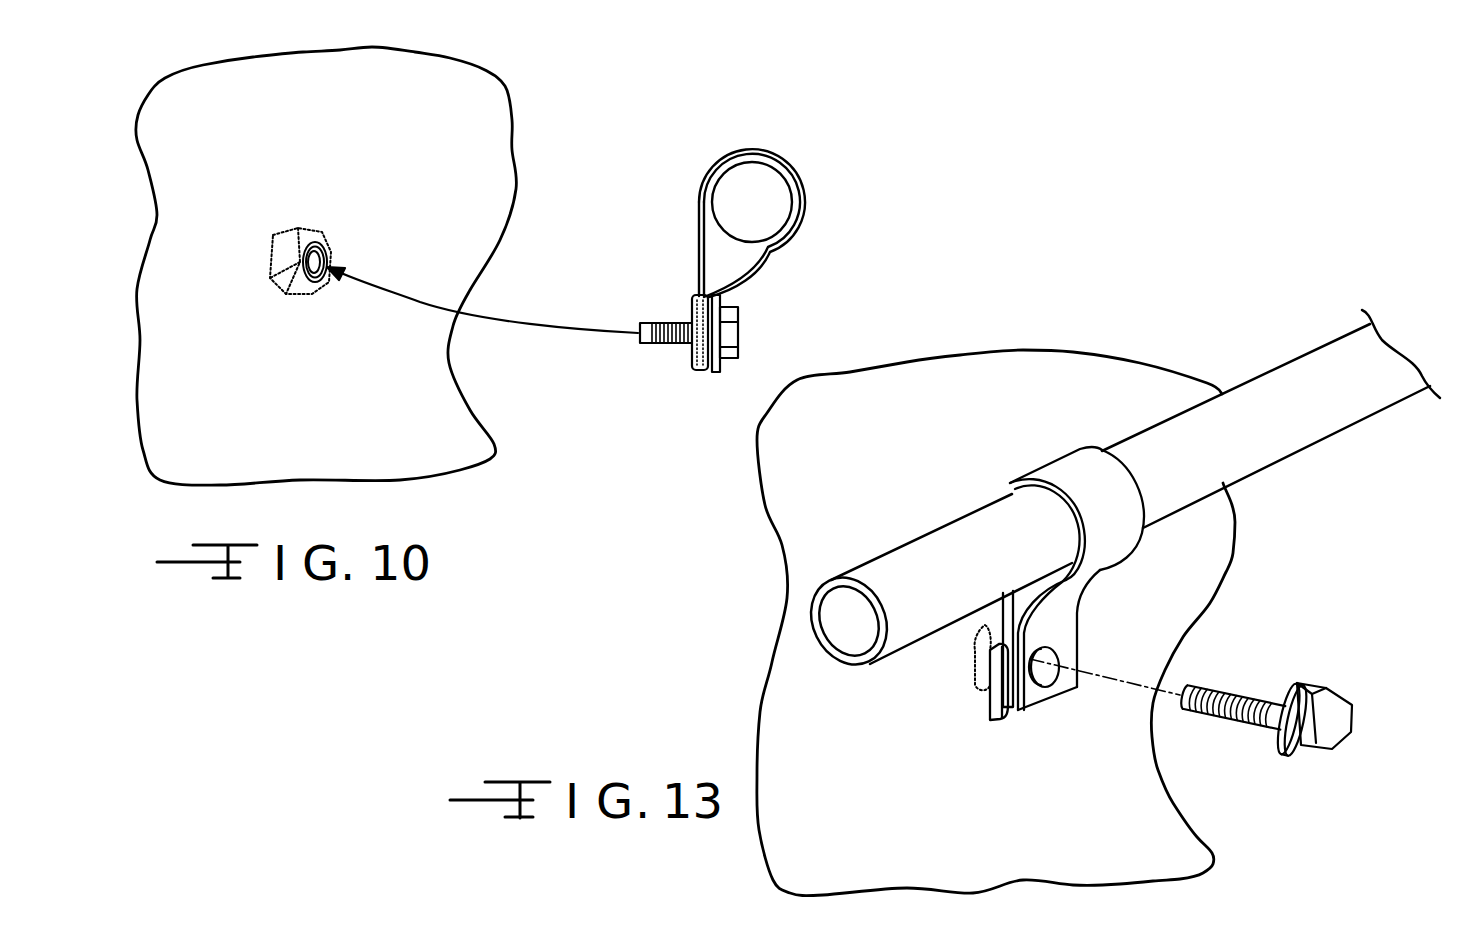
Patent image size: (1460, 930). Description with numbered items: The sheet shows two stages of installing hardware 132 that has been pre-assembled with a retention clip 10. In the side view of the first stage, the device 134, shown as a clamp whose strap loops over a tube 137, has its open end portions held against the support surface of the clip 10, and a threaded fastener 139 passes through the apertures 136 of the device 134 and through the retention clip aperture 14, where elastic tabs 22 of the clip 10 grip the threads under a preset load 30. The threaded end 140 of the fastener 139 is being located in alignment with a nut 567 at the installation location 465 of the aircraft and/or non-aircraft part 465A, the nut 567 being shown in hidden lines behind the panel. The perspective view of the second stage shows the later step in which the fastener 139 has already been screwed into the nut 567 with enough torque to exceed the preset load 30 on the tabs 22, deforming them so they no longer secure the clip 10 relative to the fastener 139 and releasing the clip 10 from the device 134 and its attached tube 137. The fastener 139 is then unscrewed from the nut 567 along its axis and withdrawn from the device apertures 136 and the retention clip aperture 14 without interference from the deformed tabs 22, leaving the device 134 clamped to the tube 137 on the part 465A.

In FIG. 10, the clip 10 is at (708, 367).
In FIG. 13, the retention clip aperture 14 is at (1057, 687).
In FIG. 10, the tabs 22 is at (692, 317).
In FIG. 10, the preset load 30 is at (685, 341).
In FIG. 13, the hardware 132 is at (1085, 622).
In FIG. 10, the device 134 is at (740, 272).
In FIG. 13, the device 134 is at (1037, 609).
In FIG. 13, the apertures 136 is at (1099, 684).
In FIG. 10, the tube 137 is at (747, 202).
In FIG. 13, the tube 137 is at (1283, 397).
In FIG. 10, the threaded fastener 139 is at (740, 333).
In FIG. 13, the threaded fastener 139 is at (1273, 693).
In FIG. 10, the threaded end 140 is at (640, 333).
In FIG. 10, the installation location 465 is at (326, 266).
In FIG. 13, the installation location 465 is at (996, 623).
In FIG. 10, the aircraft and/or non-aircraft part 465A is at (244, 291).
In FIG. 13, the aircraft and/or non-aircraft part 465A is at (973, 667).
In FIG. 10, the nut 567 is at (294, 222).
In FIG. 13, the nut 567 is at (985, 625).